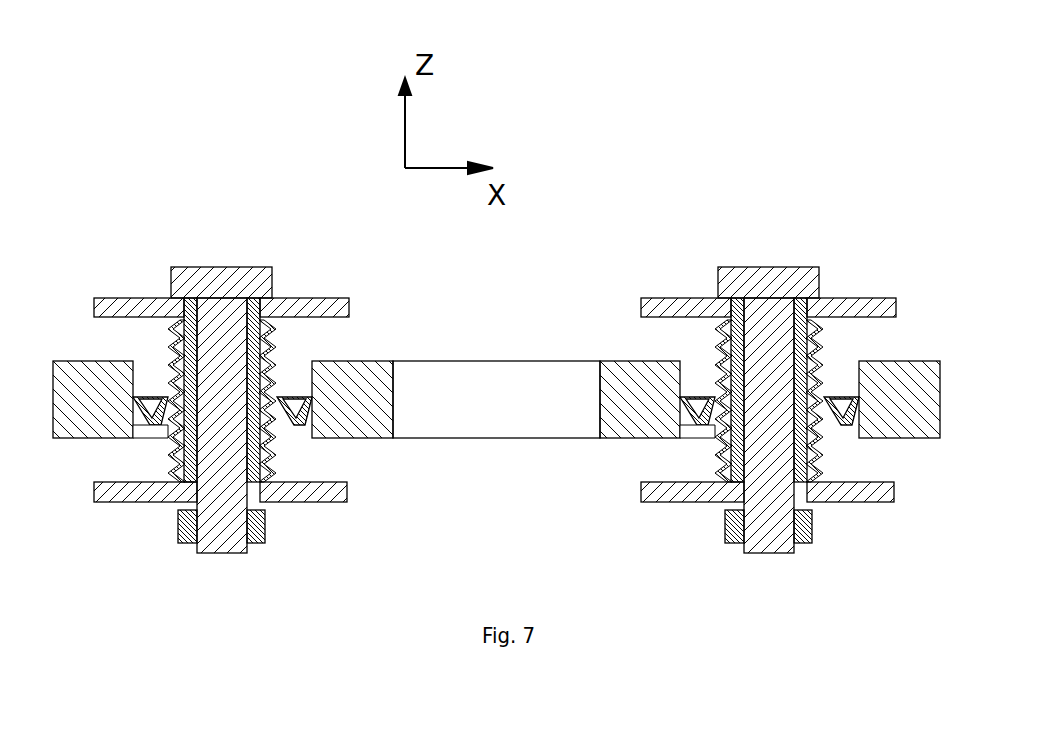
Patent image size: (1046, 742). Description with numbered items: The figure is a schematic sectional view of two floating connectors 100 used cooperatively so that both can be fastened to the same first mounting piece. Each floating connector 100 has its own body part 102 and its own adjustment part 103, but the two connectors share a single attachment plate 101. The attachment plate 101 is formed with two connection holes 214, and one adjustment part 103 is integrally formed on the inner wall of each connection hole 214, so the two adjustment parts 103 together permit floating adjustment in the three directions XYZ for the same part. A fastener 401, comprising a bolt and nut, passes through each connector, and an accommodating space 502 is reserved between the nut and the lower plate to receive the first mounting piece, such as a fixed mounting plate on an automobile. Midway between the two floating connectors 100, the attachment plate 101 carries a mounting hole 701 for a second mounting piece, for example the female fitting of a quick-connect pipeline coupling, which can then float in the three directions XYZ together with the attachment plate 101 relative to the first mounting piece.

The floating connector 100 is at (157, 236).
The attachment plate 101 is at (883, 431).
The body part 102 is at (97, 298).
The adjustment part 103 is at (270, 346).
The connection hole 214 is at (300, 432).
The fastener 401 is at (220, 267).
The accommodating space 502 is at (292, 509).
The mounting hole 701 is at (515, 377).